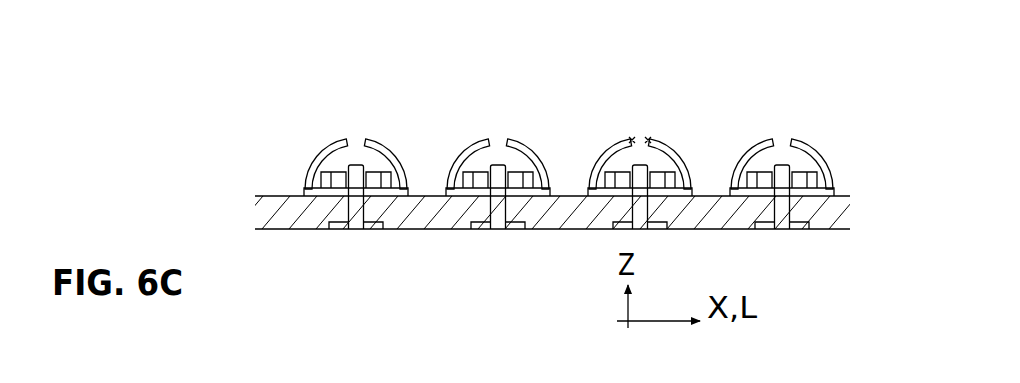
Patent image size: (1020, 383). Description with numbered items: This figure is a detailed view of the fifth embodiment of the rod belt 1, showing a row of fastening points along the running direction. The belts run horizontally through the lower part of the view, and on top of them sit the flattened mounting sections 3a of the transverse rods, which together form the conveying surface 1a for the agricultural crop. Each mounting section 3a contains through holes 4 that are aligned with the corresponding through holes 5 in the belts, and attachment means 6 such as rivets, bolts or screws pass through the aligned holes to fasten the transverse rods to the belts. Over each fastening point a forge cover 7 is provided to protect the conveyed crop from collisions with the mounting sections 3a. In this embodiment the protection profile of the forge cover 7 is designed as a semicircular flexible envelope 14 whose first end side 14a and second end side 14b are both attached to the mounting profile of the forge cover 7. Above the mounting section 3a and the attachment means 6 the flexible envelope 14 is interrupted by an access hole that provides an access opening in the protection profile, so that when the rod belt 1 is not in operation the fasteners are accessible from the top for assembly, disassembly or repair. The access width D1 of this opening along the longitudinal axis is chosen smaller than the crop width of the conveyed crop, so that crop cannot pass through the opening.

The rod belt 1 is at (461, 74).
The conveying surface 1a is at (578, 133).
The mounting section 3a is at (465, 187).
The through holes 4 is at (377, 186).
The through holes 5 is at (378, 226).
The attachment means 6 is at (505, 207).
The forge cover 7 is at (480, 141).
The flexible envelope 14 is at (333, 143).
The first end side 14a is at (311, 182).
The second end side 14b is at (409, 179).
The access width D1 is at (637, 136).